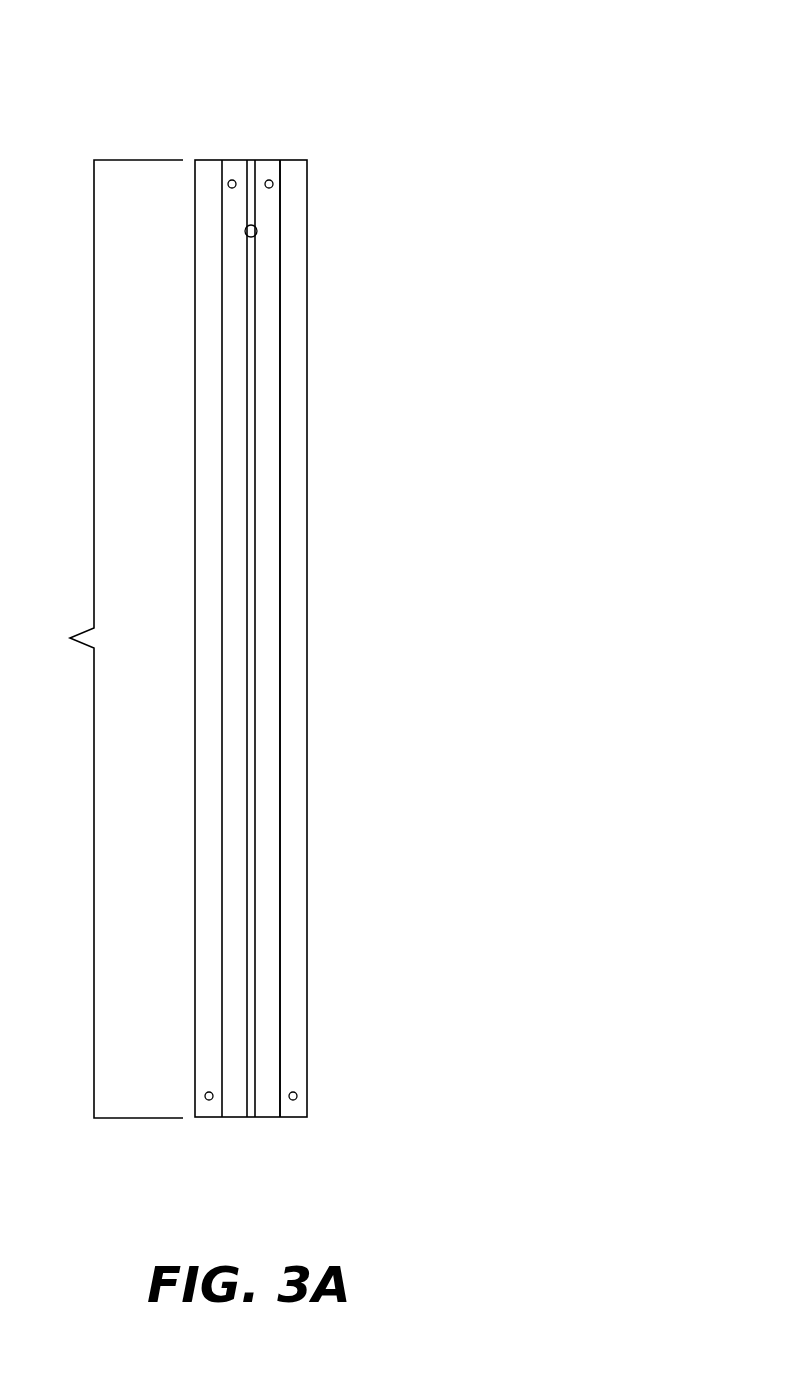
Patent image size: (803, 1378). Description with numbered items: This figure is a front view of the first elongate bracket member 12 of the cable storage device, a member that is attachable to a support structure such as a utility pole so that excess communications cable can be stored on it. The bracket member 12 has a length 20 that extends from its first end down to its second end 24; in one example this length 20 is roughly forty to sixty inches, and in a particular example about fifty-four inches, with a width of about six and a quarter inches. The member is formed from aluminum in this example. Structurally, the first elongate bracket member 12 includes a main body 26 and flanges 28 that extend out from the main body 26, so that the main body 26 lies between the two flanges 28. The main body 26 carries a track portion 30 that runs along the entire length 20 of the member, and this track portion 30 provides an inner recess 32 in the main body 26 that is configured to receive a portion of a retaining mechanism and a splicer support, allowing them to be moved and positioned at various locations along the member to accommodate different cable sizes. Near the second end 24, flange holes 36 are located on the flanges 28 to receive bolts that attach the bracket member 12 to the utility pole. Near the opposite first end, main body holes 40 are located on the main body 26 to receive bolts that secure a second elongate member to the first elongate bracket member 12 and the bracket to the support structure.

The first elongate bracket member 12 is at (363, 62).
The length 20 is at (107, 639).
The second end 24 is at (210, 1118).
The main body 26 is at (268, 848).
The flanges 28 is at (209, 908).
The track portion 30 is at (255, 987).
The inner recess 32 is at (252, 1055).
The flange holes 36 is at (205, 1095).
The main body holes 40 is at (231, 180).